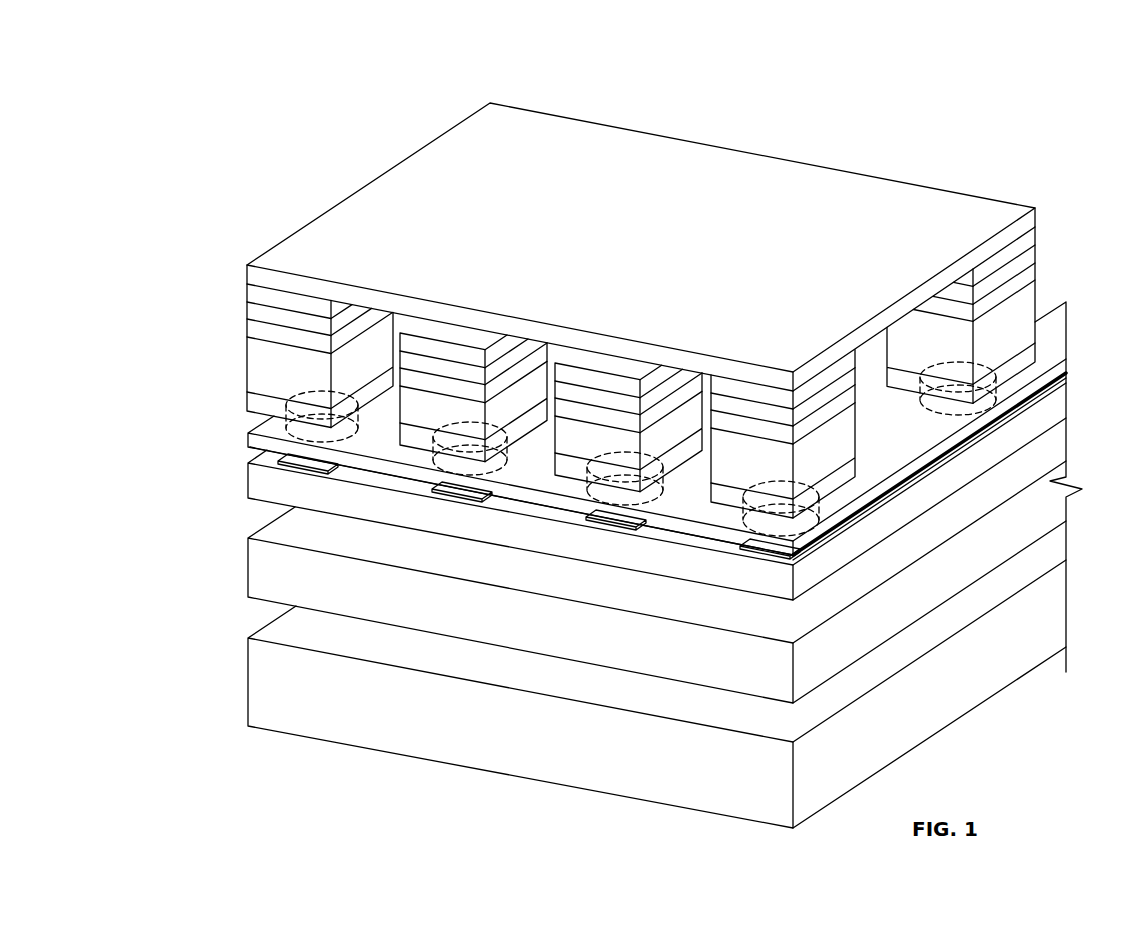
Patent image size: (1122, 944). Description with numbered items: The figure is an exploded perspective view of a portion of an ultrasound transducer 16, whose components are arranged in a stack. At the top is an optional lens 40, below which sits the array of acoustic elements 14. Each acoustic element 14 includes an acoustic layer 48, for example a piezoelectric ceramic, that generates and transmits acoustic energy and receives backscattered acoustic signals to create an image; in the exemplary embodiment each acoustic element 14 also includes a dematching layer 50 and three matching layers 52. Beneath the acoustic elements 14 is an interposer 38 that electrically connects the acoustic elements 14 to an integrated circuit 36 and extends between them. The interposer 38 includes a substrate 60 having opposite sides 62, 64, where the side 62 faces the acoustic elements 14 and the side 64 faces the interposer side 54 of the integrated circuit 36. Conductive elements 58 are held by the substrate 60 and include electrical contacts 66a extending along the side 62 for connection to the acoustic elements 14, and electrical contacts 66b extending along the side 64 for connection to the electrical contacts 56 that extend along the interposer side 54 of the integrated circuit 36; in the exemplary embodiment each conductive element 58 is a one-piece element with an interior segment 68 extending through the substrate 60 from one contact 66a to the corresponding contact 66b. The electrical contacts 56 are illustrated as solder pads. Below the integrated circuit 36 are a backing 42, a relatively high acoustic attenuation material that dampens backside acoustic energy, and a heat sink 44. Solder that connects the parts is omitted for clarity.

The ultrasound transducer 16 is at (272, 117).
The acoustic element 14 is at (236, 349).
The lens 40 is at (372, 174).
The matching layer 52 is at (240, 285).
The acoustic layer 48 is at (1075, 283).
The dematching layer 50 is at (300, 406).
The interposer 38 is at (246, 435).
The electrical contact 66a is at (250, 447).
The electrical contact 66b is at (250, 470).
The integrated circuit 36 is at (246, 500).
The backing 42 is at (246, 552).
The heat sink 44 is at (246, 680).
The electrical contact 56 is at (450, 502).
The conductive element 58 is at (338, 455).
The interposer side 54 is at (800, 560).
The substrate 60 is at (930, 462).
The side 62 is at (684, 505).
The side 64 is at (655, 535).
The interior segment 68 is at (822, 555).